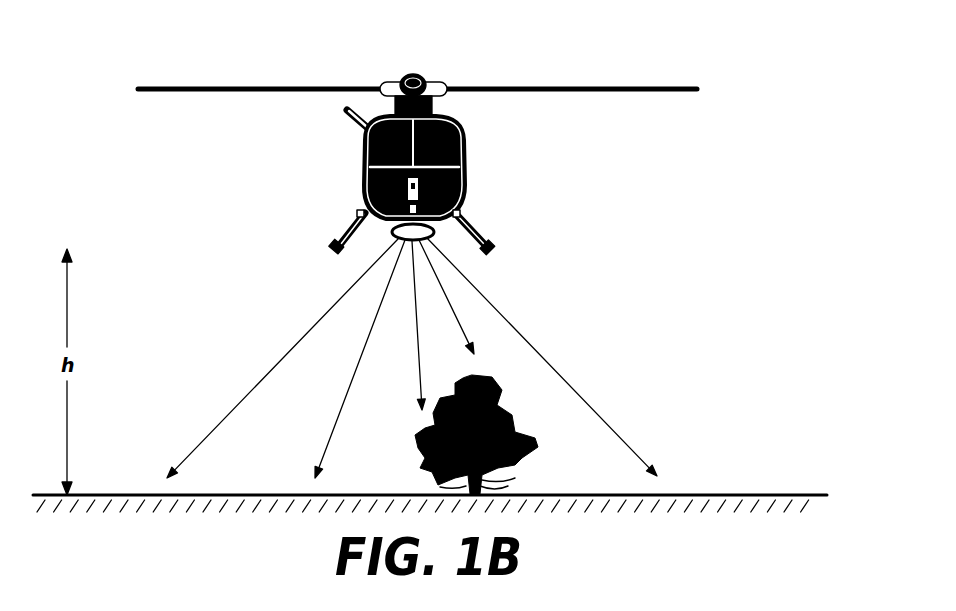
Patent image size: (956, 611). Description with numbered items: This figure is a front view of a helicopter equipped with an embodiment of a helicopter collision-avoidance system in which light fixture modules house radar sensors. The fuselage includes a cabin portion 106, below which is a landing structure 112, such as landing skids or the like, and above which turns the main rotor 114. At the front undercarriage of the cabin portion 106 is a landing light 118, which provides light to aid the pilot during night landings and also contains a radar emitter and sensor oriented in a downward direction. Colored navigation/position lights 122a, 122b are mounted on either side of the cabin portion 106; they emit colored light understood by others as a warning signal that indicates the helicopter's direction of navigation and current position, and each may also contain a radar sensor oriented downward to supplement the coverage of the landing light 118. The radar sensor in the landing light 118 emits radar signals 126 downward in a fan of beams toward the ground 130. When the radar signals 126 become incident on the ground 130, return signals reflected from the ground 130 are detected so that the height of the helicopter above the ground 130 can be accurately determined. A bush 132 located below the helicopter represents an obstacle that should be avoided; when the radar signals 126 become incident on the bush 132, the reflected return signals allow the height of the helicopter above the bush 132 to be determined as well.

The main rotor 114 is at (601, 85).
The cabin portion 106 is at (461, 142).
The landing structure 112 is at (491, 247).
The navigation/position light 122a is at (460, 213).
The navigation/position light 122b is at (358, 213).
The landing light 118 is at (397, 240).
The radar signals 126 is at (222, 347).
The bush 132 is at (513, 413).
The ground 130 is at (752, 494).